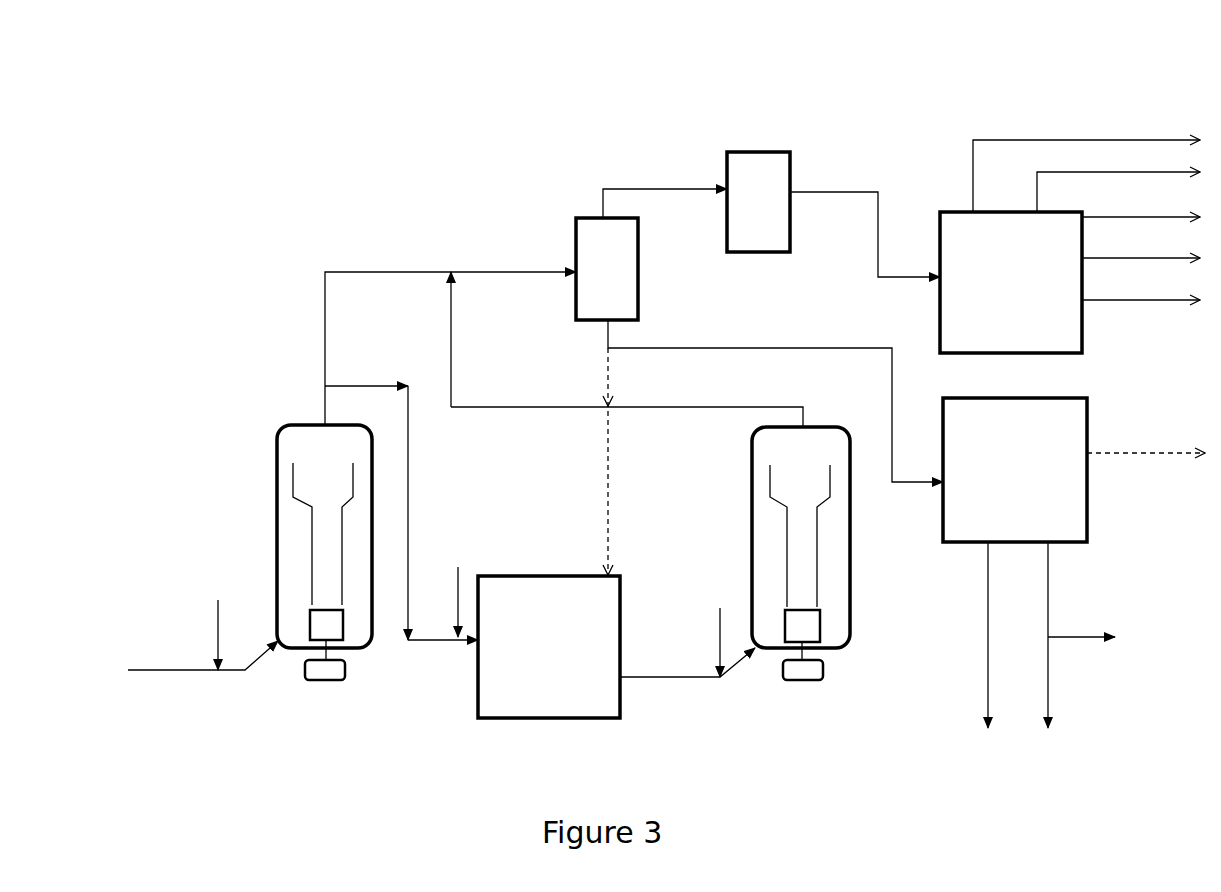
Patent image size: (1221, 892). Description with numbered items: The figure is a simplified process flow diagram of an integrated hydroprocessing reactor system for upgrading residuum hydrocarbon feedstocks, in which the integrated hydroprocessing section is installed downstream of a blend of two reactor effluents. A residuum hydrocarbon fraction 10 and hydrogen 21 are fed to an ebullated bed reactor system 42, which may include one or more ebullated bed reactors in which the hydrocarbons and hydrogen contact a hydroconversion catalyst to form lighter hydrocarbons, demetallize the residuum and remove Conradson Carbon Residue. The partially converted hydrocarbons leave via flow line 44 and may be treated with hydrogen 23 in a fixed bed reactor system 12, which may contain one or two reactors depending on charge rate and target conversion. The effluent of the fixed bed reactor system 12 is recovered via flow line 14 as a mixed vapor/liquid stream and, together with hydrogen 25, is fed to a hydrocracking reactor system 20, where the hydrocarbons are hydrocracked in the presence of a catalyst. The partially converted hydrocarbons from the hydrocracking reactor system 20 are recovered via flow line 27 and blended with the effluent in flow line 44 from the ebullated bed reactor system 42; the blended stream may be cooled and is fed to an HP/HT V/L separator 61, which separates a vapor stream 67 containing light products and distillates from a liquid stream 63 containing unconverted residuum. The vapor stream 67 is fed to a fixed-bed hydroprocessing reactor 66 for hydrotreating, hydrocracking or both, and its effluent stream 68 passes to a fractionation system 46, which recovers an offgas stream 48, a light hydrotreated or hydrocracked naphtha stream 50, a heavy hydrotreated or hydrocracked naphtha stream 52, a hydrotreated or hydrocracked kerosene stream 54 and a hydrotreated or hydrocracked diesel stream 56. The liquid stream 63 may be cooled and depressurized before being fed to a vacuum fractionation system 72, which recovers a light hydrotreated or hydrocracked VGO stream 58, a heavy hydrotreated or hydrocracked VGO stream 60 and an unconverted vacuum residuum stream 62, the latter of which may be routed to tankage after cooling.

The residuum hydrocarbon fraction 10 is at (182, 670).
The fixed bed reactor system 12 is at (549, 647).
The flow line 14 is at (682, 677).
The hydrocracking reactor system 20 is at (801, 553).
The hydrogen 21 is at (218, 637).
The hydrogen 23 is at (458, 610).
The hydrogen 25 is at (718, 644).
The flow line 27 is at (803, 418).
The ebullated bed reactor system 42 is at (324, 552).
The flow line 44 is at (325, 316).
The fractionation system 46 is at (1011, 282).
The offgas stream 48 is at (973, 170).
The light hydrotreated or hydrocracked naphtha stream 50 is at (1037, 185).
The heavy hydrotreated or hydrocracked naphtha stream 52 is at (1158, 217).
The hydrotreated or hydrocracked kerosene stream 54 is at (1153, 258).
The hydrotreated or hydrocracked diesel stream 56 is at (1160, 300).
The light hydrotreated or hydrocracked VGO stream 58 is at (1168, 453).
The heavy hydrotreated or hydrocracked VGO stream 60 is at (1048, 570).
The HP/HT V/L separator 61 is at (607, 269).
The unconverted vacuum residuum stream 62 is at (988, 595).
The liquid stream 63 is at (700, 349).
The fixed-bed hydroprocessing reactor 66 is at (758, 202).
The vapor stream 67 is at (660, 189).
The effluent stream 68 is at (865, 192).
The vacuum fractionation system 72 is at (1015, 470).